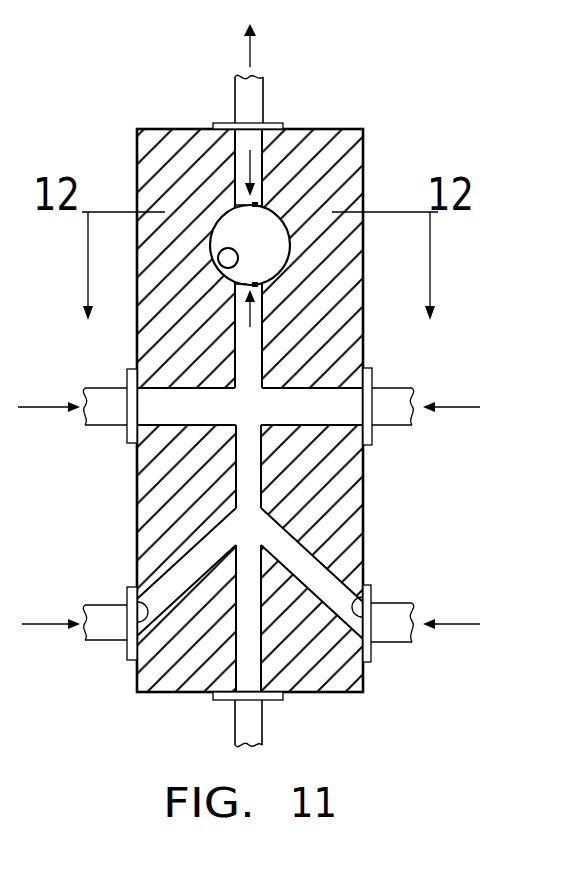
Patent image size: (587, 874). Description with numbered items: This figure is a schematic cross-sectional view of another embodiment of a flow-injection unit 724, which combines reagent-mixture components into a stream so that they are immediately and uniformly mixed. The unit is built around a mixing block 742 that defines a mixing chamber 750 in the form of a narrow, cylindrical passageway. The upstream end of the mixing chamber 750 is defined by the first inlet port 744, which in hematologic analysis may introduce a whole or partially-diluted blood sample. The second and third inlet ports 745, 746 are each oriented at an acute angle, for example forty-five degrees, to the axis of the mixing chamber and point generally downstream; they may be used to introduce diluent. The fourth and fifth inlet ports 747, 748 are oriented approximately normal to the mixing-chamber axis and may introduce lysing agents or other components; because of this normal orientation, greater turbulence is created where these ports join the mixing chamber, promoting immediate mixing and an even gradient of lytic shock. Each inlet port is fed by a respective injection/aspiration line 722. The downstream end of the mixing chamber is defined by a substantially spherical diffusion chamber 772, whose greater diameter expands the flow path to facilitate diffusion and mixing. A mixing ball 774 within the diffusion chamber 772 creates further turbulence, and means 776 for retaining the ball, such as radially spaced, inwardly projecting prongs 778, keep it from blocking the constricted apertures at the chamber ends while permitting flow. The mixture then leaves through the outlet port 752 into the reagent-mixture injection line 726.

The injection/aspiration lines 722 is at (113, 388).
The flow-injection unit 724 is at (265, 405).
The reagent-mixture injection line 726 is at (263, 103).
The mixing block 742 is at (152, 167).
The first inlet port 744 is at (243, 694).
The second inlet port 745 is at (140, 622).
The third inlet port 746 is at (362, 618).
The fourth inlet port 747 is at (157, 424).
The fifth inlet port 748 is at (343, 392).
The mixing chamber 750 is at (247, 485).
The outlet port 752 is at (236, 140).
The diffusion chamber 772 is at (265, 256).
The mixing ball 774 is at (241, 242).
The means for retaining the mixing ball 776 is at (262, 146).
The prongs 778 is at (257, 205).